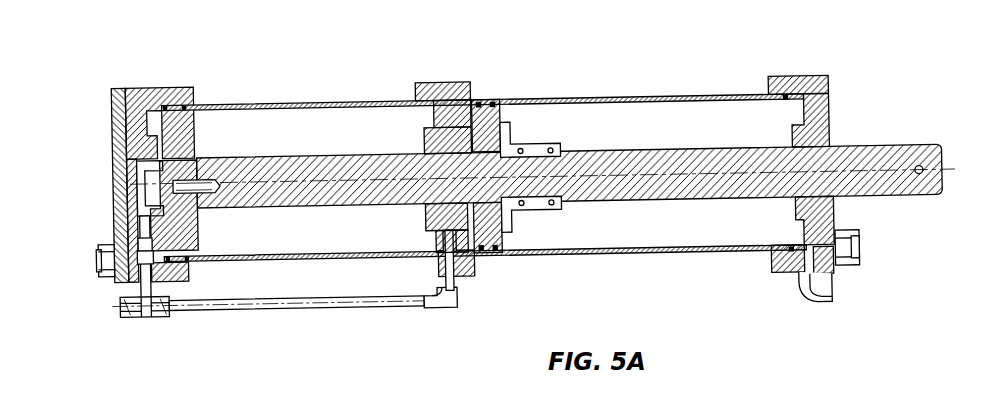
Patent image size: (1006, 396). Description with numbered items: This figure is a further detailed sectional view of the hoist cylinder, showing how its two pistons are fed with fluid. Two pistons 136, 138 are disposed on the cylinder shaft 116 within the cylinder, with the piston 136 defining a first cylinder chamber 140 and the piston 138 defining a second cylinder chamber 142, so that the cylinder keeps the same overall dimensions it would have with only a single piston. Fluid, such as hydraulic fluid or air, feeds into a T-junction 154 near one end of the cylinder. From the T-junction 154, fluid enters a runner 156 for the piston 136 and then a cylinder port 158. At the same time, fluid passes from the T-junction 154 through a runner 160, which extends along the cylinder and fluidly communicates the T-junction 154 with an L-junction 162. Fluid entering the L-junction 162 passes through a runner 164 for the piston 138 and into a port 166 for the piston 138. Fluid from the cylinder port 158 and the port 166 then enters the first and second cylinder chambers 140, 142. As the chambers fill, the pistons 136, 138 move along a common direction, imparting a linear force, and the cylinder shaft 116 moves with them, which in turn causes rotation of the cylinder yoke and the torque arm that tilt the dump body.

The cylinder shaft 116 is at (368, 171).
The piston 136 is at (187, 235).
The piston 138 is at (488, 228).
The first cylinder chamber 140 is at (275, 136).
The second cylinder chamber 142 is at (515, 129).
The T-junction 154 is at (140, 314).
The runner 156 is at (145, 254).
The cylinder port 158 is at (142, 246).
The runner 160 is at (345, 310).
The L-junction 162 is at (442, 312).
The runner 164 is at (453, 246).
The port 166 is at (452, 227).